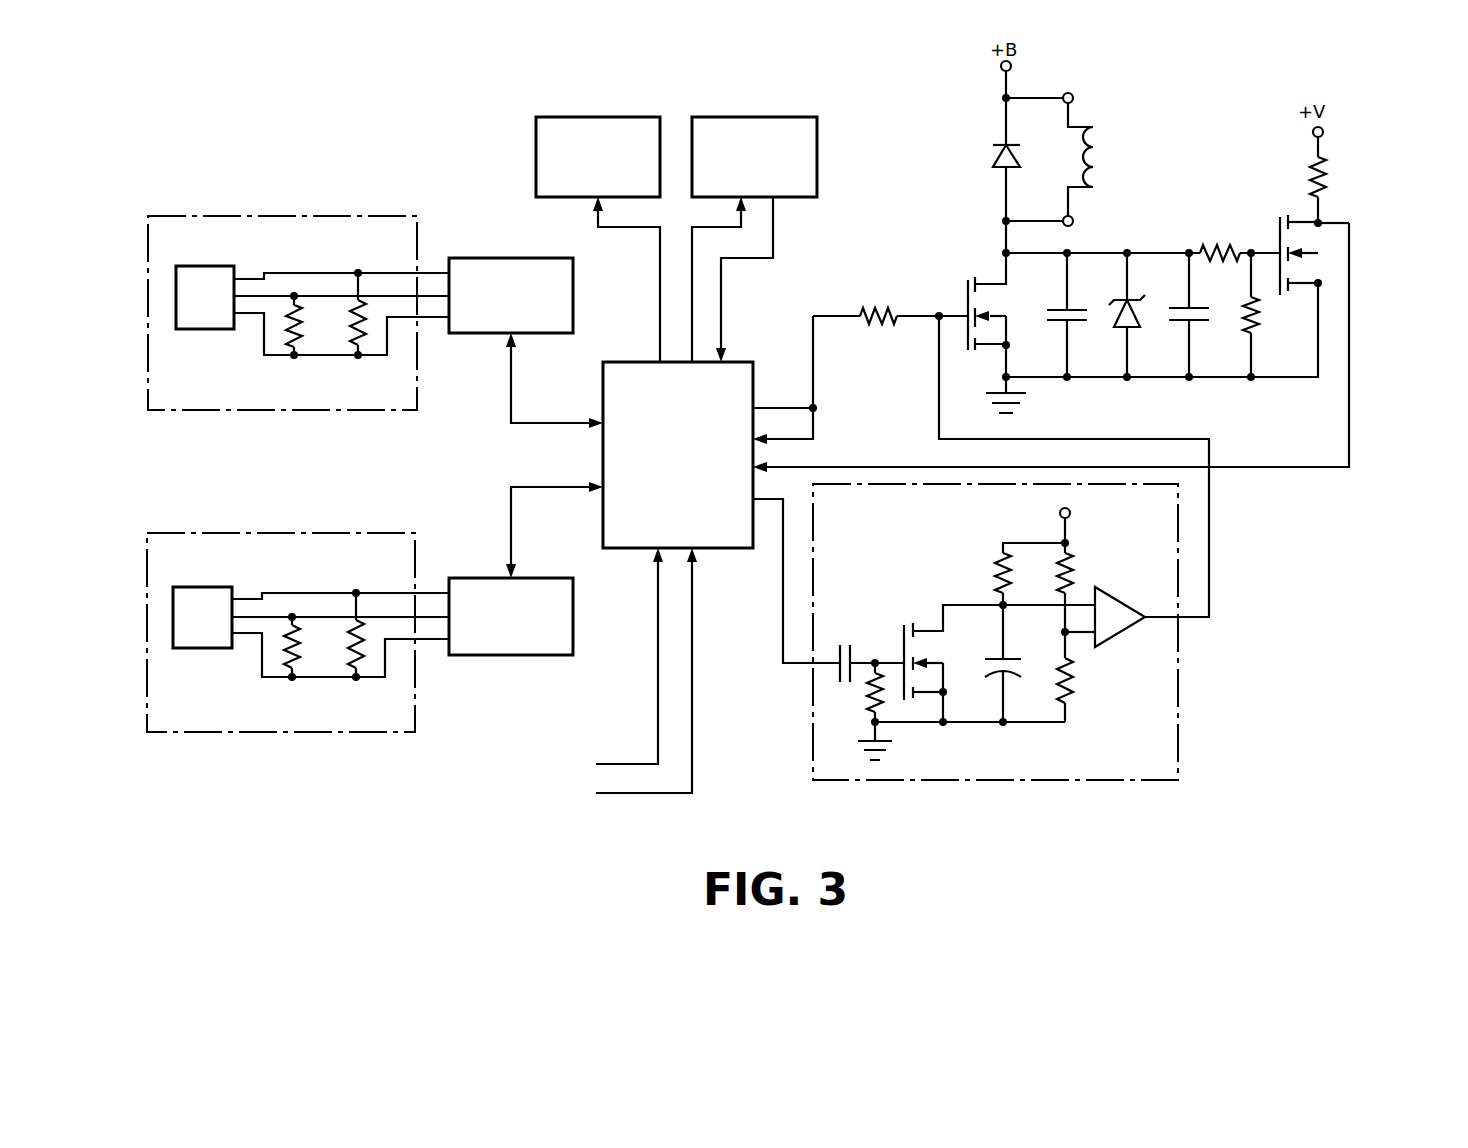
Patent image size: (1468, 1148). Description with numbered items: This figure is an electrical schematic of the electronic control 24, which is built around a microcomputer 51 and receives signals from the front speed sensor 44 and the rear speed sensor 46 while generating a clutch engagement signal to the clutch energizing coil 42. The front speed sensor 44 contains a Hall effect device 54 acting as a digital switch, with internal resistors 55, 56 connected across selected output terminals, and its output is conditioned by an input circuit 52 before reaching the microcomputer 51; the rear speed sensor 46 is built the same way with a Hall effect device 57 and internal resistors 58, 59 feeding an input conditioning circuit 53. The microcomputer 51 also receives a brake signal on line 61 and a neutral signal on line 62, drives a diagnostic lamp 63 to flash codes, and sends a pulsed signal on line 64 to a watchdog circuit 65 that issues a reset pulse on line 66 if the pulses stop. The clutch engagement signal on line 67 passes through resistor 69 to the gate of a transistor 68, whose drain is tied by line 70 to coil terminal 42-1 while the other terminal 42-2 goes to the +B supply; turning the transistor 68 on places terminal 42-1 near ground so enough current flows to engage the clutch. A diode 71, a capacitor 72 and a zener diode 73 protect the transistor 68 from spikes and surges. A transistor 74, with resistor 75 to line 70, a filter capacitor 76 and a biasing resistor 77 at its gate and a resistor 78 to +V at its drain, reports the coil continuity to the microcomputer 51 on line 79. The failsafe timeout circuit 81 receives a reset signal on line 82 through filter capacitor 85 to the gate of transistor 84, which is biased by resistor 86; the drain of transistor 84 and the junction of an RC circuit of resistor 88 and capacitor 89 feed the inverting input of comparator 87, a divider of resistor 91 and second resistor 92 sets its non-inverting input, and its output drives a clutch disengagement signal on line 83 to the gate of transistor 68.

The electronic control 24 is at (585, 84).
The clutch energizing coil 42 is at (1132, 130).
The clutch coil terminal 42-1 is at (1075, 218).
The clutch coil terminal 42-2 is at (1072, 93).
The front speed sensor 44 is at (355, 170).
The rear speed sensor 46 is at (268, 745).
The microcomputer 51 is at (657, 525).
The input circuit 52 is at (487, 258).
The input conditioning circuit 53 is at (500, 660).
The Hall effect device 54 is at (205, 266).
The internal resistor 55 is at (288, 325).
The internal resistor 56 is at (348, 328).
The Hall effect device 57 is at (205, 587).
The internal resistor 58 is at (285, 650).
The internal resistor 59 is at (350, 650).
The line 61 is at (622, 764).
The line 62 is at (630, 795).
The diagnostic lamp 63 is at (620, 117).
The line 64 is at (738, 208).
The watchdog circuit 65 is at (768, 117).
The line 66 is at (773, 240).
The line 67 is at (815, 362).
The transistor 68 is at (968, 293).
The resistor 69 is at (886, 306).
The line 70 is at (1006, 238).
The diode 71 is at (993, 159).
The capacitor 72 is at (1073, 323).
The zener diode 73 is at (1141, 297).
The transistor 74 is at (1280, 234).
The resistor 75 is at (1218, 247).
The filter capacitor 76 is at (1197, 325).
The biasing resistor 77 is at (1258, 318).
The resistor 78 is at (1330, 166).
The line 79 is at (1352, 392).
The failsafe timeout circuit 81 is at (1190, 693).
The line 82 is at (783, 600).
The line 83 is at (1209, 545).
The transistor 84 is at (901, 636).
The filter capacitor 85 is at (856, 648).
The resistor 86 is at (870, 688).
The comparator 87 is at (1121, 606).
The resistor 88 is at (1000, 561).
The capacitor 89 is at (1000, 671).
The resistor 91 is at (1078, 568).
The second resistor 92 is at (1073, 681).